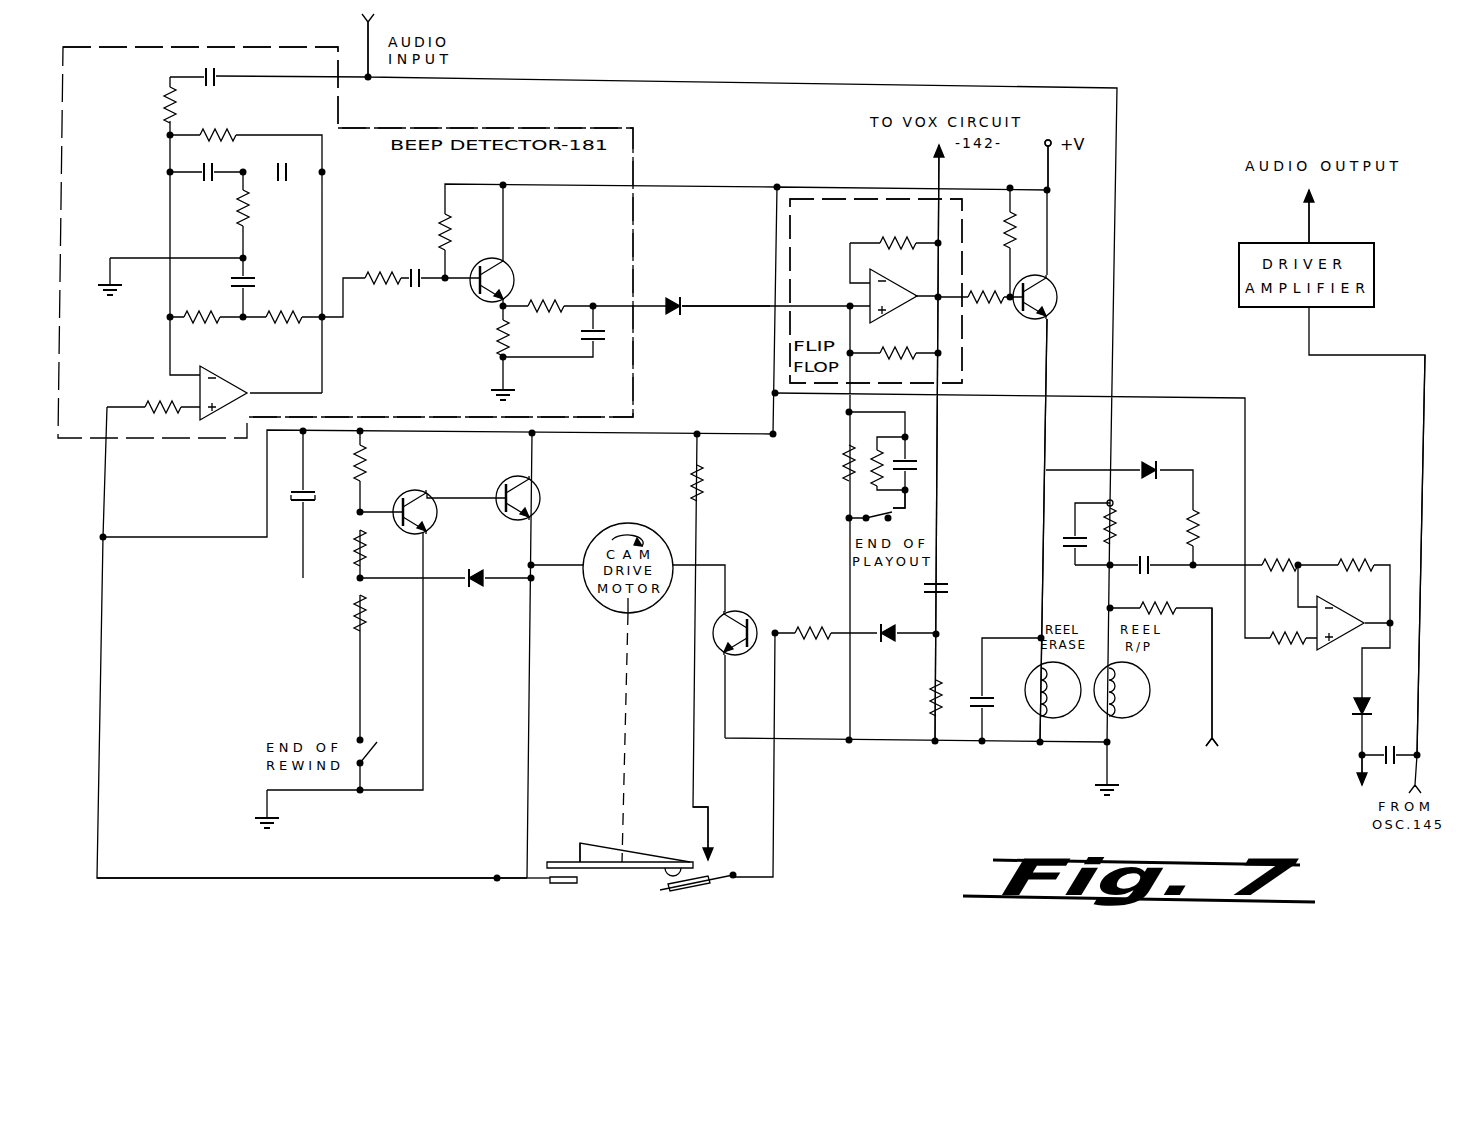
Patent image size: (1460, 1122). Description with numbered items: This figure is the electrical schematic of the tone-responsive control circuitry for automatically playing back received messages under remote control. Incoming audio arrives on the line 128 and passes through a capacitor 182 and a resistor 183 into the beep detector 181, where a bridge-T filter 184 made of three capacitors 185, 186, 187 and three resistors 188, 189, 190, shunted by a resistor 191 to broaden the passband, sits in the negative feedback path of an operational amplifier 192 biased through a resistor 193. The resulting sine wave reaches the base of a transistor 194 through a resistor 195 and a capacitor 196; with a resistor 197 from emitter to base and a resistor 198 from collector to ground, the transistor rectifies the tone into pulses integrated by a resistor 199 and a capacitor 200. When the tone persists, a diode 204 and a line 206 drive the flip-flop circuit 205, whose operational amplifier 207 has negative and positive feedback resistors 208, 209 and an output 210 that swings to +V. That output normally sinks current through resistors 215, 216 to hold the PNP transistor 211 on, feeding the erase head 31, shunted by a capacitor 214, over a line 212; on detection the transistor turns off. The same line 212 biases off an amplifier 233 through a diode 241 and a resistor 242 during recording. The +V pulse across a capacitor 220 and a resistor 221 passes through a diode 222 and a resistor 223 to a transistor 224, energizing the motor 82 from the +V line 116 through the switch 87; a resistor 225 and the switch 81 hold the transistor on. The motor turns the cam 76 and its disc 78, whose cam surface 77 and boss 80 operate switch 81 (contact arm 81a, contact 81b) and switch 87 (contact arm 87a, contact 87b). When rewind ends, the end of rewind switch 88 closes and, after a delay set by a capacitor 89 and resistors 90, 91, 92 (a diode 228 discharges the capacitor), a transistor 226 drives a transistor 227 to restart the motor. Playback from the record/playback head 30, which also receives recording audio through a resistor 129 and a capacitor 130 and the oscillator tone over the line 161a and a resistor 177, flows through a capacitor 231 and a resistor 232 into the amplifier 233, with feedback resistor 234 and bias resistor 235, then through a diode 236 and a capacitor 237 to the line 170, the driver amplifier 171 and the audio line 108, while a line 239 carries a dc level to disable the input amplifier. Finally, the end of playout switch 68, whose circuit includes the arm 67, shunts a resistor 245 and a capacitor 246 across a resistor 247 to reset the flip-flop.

The line 128 is at (366, 44).
The capacitor 182 is at (206, 73).
The resistor 183 is at (163, 104).
The resistor 191 is at (222, 130).
The capacitor 186 is at (285, 160).
The capacitor 185 is at (200, 168).
The bridge-T filter 184 is at (330, 202).
The resistor 190 is at (252, 206).
The capacitor 187 is at (255, 285).
The resistor 188 is at (195, 322).
The resistor 189 is at (285, 322).
The resistor 193 is at (157, 402).
The operational amplifier 192 is at (240, 380).
The beep detector 181 is at (606, 154).
The resistor 197 is at (443, 220).
The resistor 195 is at (385, 270).
The capacitor 196 is at (414, 287).
The transistor 194 is at (511, 268).
The resistor 199 is at (556, 293).
The resistor 198 is at (496, 339).
The capacitor 200 is at (602, 344).
The diode 204 is at (672, 295).
The line 206 is at (734, 302).
The flip-flop circuit 205 is at (813, 200).
The output 210 is at (938, 172).
The operational amplifier 207 is at (870, 292).
The resistor 208 is at (900, 232).
The resistor 209 is at (897, 344).
The resistor 215 is at (1008, 230).
The resistor 216 is at (992, 308).
The PNP transistor 211 is at (1057, 297).
The +V line 116 is at (1050, 169).
The line 212 is at (1046, 428).
The diode 241 is at (1148, 460).
The resistor 242 is at (1200, 522).
The resistor 129 is at (1116, 526).
The capacitor 130 is at (1068, 555).
The capacitor 231 is at (1144, 574).
The resistor 177 is at (1176, 606).
The resistor 232 is at (1275, 560).
The resistor 234 is at (1360, 550).
The amplifier 233 is at (1330, 648).
The resistor 235 is at (1277, 644).
The line 170 is at (1419, 676).
The diode 236 is at (1352, 712).
The capacitor 237 is at (1390, 746).
The line 239 is at (1362, 772).
The line 161a is at (1214, 712).
The capacitor 214 is at (990, 696).
The erase head 31 is at (1056, 718).
The record/playback head 30 is at (1130, 716).
The capacitor 220 is at (950, 585).
The diode 222 is at (888, 624).
The resistor 221 is at (930, 700).
The resistor 223 is at (800, 626).
The transistor 224 is at (748, 612).
The resistor 225 is at (702, 482).
The resistor 247 is at (842, 462).
The resistor 245 is at (872, 476).
The capacitor 246 is at (920, 460).
The arm 67 is at (906, 510).
The end of playout switch 68 is at (887, 514).
The motor 82 is at (626, 524).
The transistor 227 is at (538, 486).
The transistor 226 is at (416, 490).
The diode 228 is at (477, 588).
The capacitor 89 is at (318, 488).
The resistor 90 is at (372, 458).
The resistor 91 is at (354, 546).
The resistor 92 is at (354, 609).
The end of rewind switch 88 is at (368, 740).
The contact 87b is at (526, 860).
The contact arm 87a is at (542, 884).
The switch 87 is at (572, 890).
The cam 76 is at (612, 876).
The cam surface 77 is at (630, 852).
The disc 78 is at (562, 856).
The boss 80 is at (665, 876).
The switch 81 is at (690, 890).
The contact arm 81a is at (706, 888).
The contact 81b is at (712, 862).
The driver amplifier 171 is at (1254, 243).
The audio line 108 is at (1310, 212).